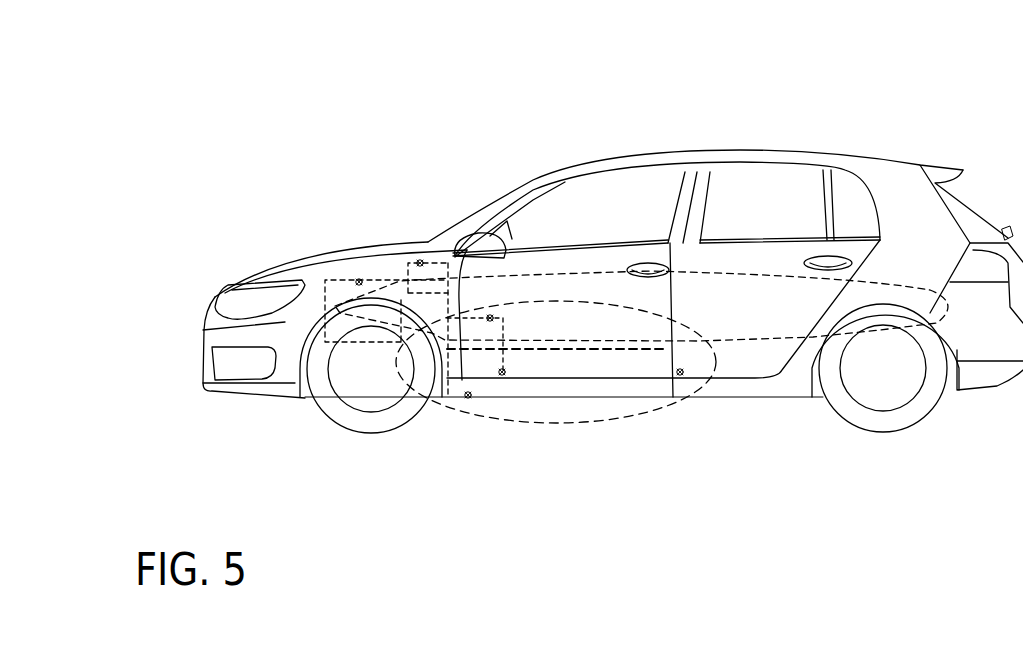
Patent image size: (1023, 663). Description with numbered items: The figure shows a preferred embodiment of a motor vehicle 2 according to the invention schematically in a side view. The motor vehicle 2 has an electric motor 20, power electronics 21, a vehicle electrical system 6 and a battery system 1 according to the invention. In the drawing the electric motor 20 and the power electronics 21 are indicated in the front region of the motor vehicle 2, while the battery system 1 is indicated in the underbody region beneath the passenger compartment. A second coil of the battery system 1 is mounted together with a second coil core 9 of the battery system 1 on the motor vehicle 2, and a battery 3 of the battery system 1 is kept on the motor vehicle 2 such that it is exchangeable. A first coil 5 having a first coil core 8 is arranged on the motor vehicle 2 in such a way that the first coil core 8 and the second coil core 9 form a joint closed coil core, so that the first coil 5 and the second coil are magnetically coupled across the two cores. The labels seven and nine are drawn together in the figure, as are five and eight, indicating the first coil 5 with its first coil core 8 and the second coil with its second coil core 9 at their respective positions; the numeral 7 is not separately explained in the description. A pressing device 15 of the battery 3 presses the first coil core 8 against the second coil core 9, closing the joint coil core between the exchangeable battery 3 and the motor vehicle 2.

The battery system 1 is at (500, 420).
The motor vehicle 2 is at (665, 100).
The battery 3 is at (680, 374).
The first coil 5 is at (531, 428).
The vehicle electrical system 6 is at (600, 267).
The sensor 7 is at (552, 258).
The first coil core 8 is at (502, 374).
The second coil core 9 is at (490, 317).
The pressing device 15 is at (468, 397).
The electric motor 20 is at (359, 281).
The power electronics 21 is at (420, 262).